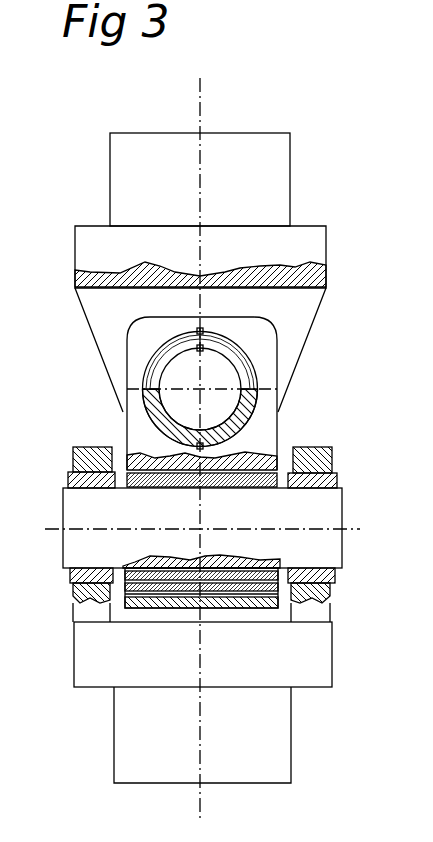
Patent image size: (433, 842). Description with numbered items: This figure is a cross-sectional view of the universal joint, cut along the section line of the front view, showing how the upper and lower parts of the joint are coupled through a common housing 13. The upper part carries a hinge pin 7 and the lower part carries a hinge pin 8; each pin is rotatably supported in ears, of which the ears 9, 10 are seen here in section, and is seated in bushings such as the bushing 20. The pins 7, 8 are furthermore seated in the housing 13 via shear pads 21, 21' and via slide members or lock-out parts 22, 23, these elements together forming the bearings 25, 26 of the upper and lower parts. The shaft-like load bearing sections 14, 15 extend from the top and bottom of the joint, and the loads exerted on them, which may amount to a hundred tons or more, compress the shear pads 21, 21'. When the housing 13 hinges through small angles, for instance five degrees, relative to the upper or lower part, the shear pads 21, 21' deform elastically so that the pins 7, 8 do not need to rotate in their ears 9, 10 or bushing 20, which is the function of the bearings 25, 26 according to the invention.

The load bearing section 14 is at (277, 158).
The load bearing section 15 is at (265, 762).
The hinge pin 8 is at (93, 546).
The ear 9 is at (73, 463).
The ear 10 is at (332, 460).
The bushing 20 is at (337, 480).
The slide member or lock-out part 23 is at (250, 490).
The housing 13 is at (259, 441).
The shear pad 21 is at (249, 388).
The slide member or lock-out part 22 is at (253, 406).
The hinge pin 7 is at (178, 408).
The bearing 25 is at (133, 377).
The bearing 26 is at (143, 613).
The shear pad 21' is at (265, 605).